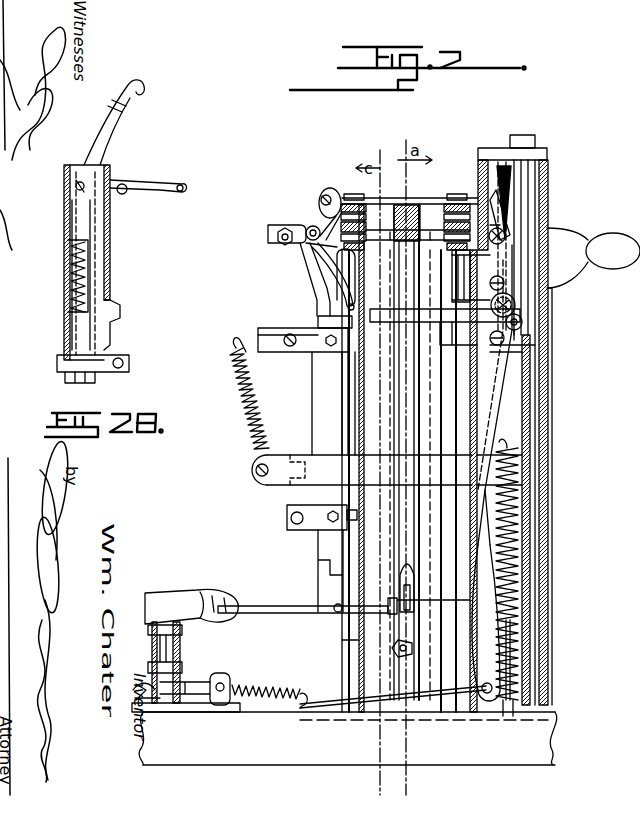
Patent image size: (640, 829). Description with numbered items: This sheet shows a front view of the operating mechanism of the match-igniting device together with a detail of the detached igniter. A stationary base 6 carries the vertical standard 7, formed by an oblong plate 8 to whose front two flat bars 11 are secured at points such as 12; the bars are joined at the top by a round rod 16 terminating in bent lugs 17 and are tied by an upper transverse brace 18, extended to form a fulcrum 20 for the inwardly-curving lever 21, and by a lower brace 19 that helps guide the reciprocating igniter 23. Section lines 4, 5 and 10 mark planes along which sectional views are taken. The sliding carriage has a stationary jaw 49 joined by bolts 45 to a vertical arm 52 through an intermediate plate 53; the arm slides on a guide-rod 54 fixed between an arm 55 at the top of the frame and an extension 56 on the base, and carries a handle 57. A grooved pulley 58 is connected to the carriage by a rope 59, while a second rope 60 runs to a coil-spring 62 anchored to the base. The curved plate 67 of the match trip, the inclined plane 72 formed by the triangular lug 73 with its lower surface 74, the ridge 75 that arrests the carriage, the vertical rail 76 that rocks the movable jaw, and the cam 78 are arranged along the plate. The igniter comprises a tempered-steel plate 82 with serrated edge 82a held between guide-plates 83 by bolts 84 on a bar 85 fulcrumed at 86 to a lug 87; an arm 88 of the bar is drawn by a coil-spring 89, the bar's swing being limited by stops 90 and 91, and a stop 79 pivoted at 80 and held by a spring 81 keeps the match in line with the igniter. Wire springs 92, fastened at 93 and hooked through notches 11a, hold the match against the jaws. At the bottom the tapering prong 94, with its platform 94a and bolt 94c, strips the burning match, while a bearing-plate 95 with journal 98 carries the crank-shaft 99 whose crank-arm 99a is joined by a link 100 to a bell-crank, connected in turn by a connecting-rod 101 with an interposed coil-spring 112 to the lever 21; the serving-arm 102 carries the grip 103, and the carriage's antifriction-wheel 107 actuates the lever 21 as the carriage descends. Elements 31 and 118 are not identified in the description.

In FIG. 2, the section line 4 is at (404, 462).
In FIG. 2, the section line 5 is at (377, 470).
In FIG. 2, the stationary base 6 is at (348, 738).
In FIG. 2, the frame or standard 7 is at (338, 629).
In FIG. 2, the vertical oblong plate 8 is at (496, 446).
In FIG. 2, the section line 10 is at (459, 470).
In FIG. 2, the flat bars 11 is at (408, 237).
In FIG. 2, the notches 11a is at (557, 582).
In FIG. 2, the securing point 12 is at (320, 192).
In FIG. 2, the round rod 16 is at (405, 206).
In FIG. 2, the bent lugs 17 is at (290, 200).
In FIG. 2, the upper transverse brace 18 is at (445, 325).
In FIG. 2, the lower transverse brace 19 is at (262, 480).
In FIG. 2, the fulcrum 20 is at (522, 321).
In FIG. 2, the lever 21 is at (505, 385).
In FIG. 2, the reciprocating igniter 23 is at (312, 390).
In FIG. 2, the bolts 31 is at (352, 192).
In FIG. 2, the bolts 45 is at (505, 337).
In FIG. 2, the stationary jaw 49 is at (470, 262).
In FIG. 2, the vertical arm 52 is at (512, 188).
In FIG. 2, the intermediate plate 53 is at (498, 283).
In FIG. 2, the guide-rod 54 is at (530, 430).
In FIG. 2, the arm 55 is at (499, 148).
In FIG. 2, the extension 56 is at (528, 716).
In FIG. 2, the handle 57 is at (613, 251).
In FIG. 2, the grooved pulley 58 is at (515, 200).
In FIG. 2, the rope 59 is at (512, 296).
In FIG. 2, the rope 60 is at (522, 350).
In FIG. 2, the coil-spring 62 is at (505, 499).
In FIG. 2, the curved trip plate 67 is at (508, 486).
In FIG. 2, the inclined plane 72 is at (336, 250).
In FIG. 2, the triangular lug 73 is at (360, 234).
In FIG. 2, the lower surface of lug 74 is at (560, 233).
In FIG. 2, the ridge 75 is at (520, 210).
In FIG. 2, the vertical rail 76 is at (360, 659).
In FIG. 2, the cam 78 is at (526, 327).
In FIG. 2, the stop 79 is at (320, 290).
In FIG. 2, the fulcrum 80 is at (306, 231).
In FIG. 2, the spring 81 is at (347, 275).
In FIG. 28, the igniting-plate 82 is at (86, 290).
In FIG. 28, the serrated edge 82a is at (70, 276).
In FIG. 28, the guide-plates 83 is at (72, 216).
In FIG. 2, the guide-plates 83 is at (332, 430).
In FIG. 28, the bolts 84 is at (80, 182).
In FIG. 2, the bolts 84 is at (318, 332).
In FIG. 28, the bar 85 is at (108, 239).
In FIG. 2, the bar 85 is at (318, 406).
In FIG. 2, the fulcrum 86 is at (277, 236).
In FIG. 2, the lug 87 is at (270, 244).
In FIG. 28, the arm 88 is at (150, 182).
In FIG. 2, the arm 88 is at (280, 352).
In FIG. 2, the coil-spring 89 is at (244, 392).
In FIG. 2, the stop 90 is at (350, 520).
In FIG. 2, the stop 91 is at (292, 478).
In FIG. 2, the wire springs 92 is at (522, 538).
In FIG. 2, the securing point 93 is at (388, 274).
In FIG. 2, the tapering prong 94 is at (520, 604).
In FIG. 2, the platform 94a is at (520, 628).
In FIG. 2, the bolt 94c is at (520, 650).
In FIG. 2, the bearing-plate 95 is at (182, 684).
In FIG. 2, the journal 98 is at (181, 648).
In FIG. 2, the crank-shaft 99 is at (152, 652).
In FIG. 2, the crank-arm 99a is at (176, 704).
In FIG. 2, the link 100 is at (140, 684).
In FIG. 2, the connecting-rod 101 is at (442, 685).
In FIG. 2, the serving-arm 102 is at (303, 599).
In FIG. 2, the gripping device 103 is at (393, 599).
In FIG. 2, the antifriction-wheel 107 is at (510, 310).
In FIG. 2, the coil-spring 112 is at (262, 686).
In FIG. 2, the hand grip 118 is at (188, 595).